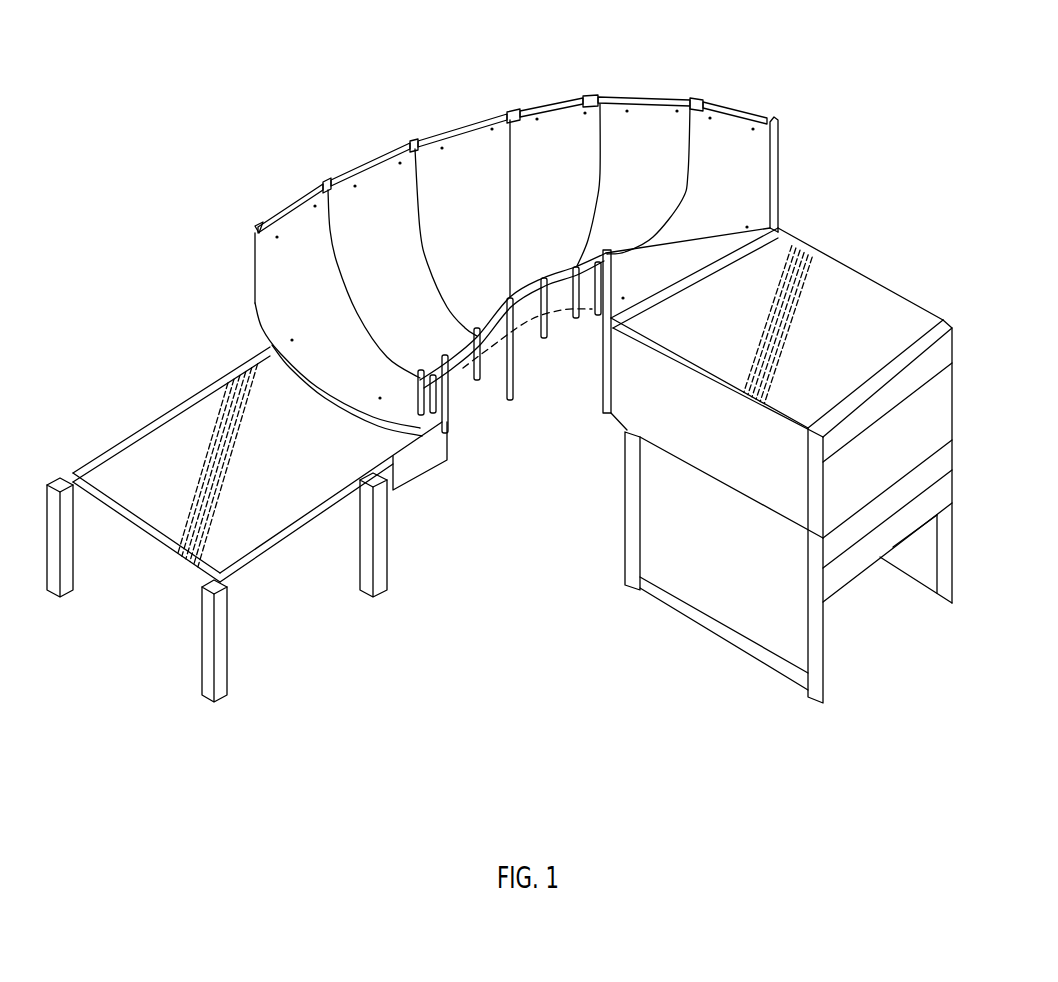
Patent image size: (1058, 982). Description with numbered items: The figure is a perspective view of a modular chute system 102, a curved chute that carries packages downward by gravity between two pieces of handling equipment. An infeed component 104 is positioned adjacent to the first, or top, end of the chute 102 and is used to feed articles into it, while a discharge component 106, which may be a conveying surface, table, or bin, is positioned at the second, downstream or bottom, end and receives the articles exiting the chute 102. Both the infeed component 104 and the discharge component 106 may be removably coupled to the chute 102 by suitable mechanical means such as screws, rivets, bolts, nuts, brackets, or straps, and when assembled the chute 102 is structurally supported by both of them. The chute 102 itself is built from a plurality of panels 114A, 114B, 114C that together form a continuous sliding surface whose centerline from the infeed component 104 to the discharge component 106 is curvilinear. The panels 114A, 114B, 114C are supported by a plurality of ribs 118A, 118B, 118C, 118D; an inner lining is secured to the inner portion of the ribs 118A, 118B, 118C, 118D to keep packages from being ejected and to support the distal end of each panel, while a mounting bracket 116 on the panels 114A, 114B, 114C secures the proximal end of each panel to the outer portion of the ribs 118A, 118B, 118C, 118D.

The modular chute system 102 is at (686, 48).
The infeed component 104 is at (850, 263).
The discharge component 106 is at (200, 407).
The panel 114A is at (688, 225).
The panel 114B is at (648, 180).
The panel 114C is at (430, 270).
The mounting bracket 116 is at (450, 128).
The rib 118A is at (778, 178).
The rib 118B is at (574, 320).
The rib 118C is at (545, 339).
The rib 118D is at (443, 432).